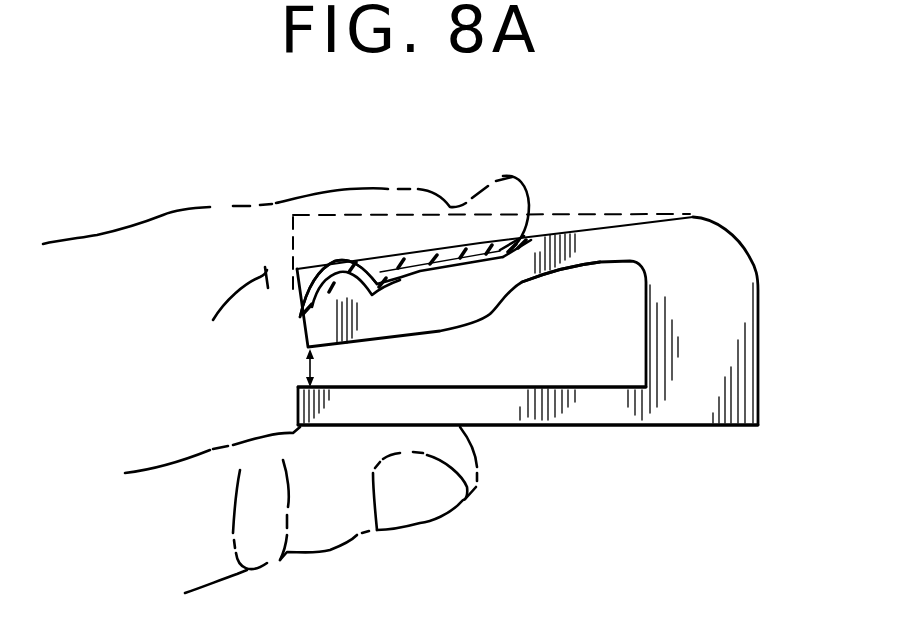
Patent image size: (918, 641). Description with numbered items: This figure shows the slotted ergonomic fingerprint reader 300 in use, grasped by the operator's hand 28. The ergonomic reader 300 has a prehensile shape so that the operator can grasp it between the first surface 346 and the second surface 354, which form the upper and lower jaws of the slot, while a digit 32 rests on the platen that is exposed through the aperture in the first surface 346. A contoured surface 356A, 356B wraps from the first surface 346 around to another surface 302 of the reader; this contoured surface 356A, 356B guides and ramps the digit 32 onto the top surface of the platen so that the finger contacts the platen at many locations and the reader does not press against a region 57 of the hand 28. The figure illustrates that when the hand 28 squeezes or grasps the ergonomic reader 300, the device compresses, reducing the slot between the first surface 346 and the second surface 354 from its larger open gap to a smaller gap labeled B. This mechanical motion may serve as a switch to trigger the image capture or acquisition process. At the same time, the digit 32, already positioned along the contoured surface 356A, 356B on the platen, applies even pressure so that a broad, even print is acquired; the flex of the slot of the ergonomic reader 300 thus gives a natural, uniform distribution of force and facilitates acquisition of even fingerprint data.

The hand 28 is at (203, 195).
The digit 32 is at (347, 228).
The region of the hand 57 is at (270, 298).
The ergonomic reader 300 is at (705, 214).
The surface 302 is at (300, 316).
The first surface 346 is at (576, 234).
The second surface 354 is at (598, 408).
The contoured surface (guide portion) 356A is at (406, 258).
The contoured surface (ramp portion) 356B is at (347, 253).